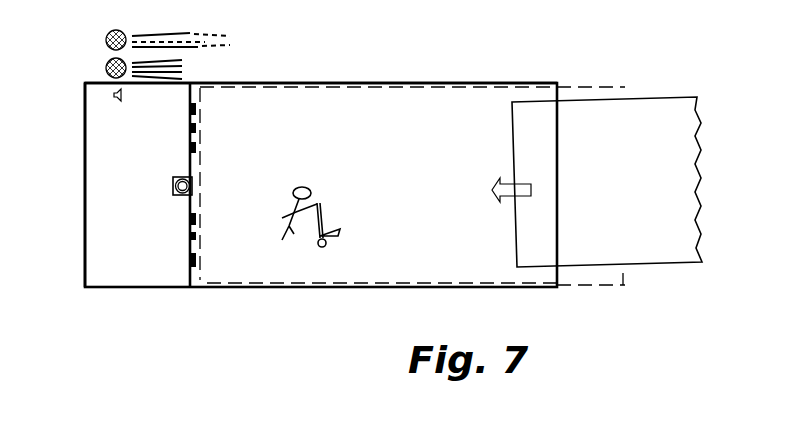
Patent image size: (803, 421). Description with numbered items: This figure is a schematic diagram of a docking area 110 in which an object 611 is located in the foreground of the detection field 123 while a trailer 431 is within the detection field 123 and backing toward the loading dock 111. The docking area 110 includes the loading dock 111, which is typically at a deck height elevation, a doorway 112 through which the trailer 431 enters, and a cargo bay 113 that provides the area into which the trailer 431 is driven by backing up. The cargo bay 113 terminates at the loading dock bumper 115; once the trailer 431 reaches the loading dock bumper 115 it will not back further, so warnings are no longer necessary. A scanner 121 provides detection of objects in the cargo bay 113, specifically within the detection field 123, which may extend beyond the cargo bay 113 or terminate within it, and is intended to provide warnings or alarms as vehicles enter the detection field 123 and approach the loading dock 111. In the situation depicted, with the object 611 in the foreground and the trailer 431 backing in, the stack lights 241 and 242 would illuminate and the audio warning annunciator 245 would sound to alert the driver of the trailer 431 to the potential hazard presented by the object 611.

The docking area 110 is at (334, 58).
The loading dock 111 is at (153, 181).
The doorway 112 is at (86, 258).
The cargo bay 113 is at (442, 81).
The loading dock bumper 115 is at (195, 99).
The scanner 121 is at (194, 188).
The detection field 123 is at (578, 83).
The stack light 241 is at (106, 70).
The stack light 242 is at (106, 42).
The audio warning annunciator 245 is at (116, 95).
The trailer 431 is at (625, 226).
The object 611 is at (336, 193).